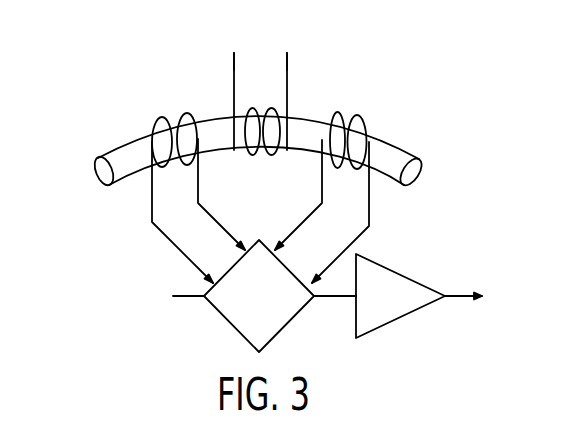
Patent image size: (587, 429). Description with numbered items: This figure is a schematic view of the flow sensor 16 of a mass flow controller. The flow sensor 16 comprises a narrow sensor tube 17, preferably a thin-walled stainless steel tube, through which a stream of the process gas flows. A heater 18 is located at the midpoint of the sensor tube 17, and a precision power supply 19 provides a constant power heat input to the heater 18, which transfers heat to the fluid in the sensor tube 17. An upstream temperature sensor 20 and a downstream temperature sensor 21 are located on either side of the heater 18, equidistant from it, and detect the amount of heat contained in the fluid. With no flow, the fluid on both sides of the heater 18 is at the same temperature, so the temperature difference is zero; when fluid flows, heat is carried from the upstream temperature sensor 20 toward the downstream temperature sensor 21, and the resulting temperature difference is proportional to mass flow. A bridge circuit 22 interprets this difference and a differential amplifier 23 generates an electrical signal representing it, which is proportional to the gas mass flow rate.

The flow sensor 16 is at (417, 130).
The sensor tube 17 is at (128, 157).
The heater 18 is at (277, 135).
The precision power supply 19 is at (253, 65).
The upstream temperature sensing element 20 is at (177, 112).
The downstream temperature sensing element 21 is at (346, 113).
The bridge circuit 22 is at (280, 320).
The differential amplifier 23 is at (400, 280).